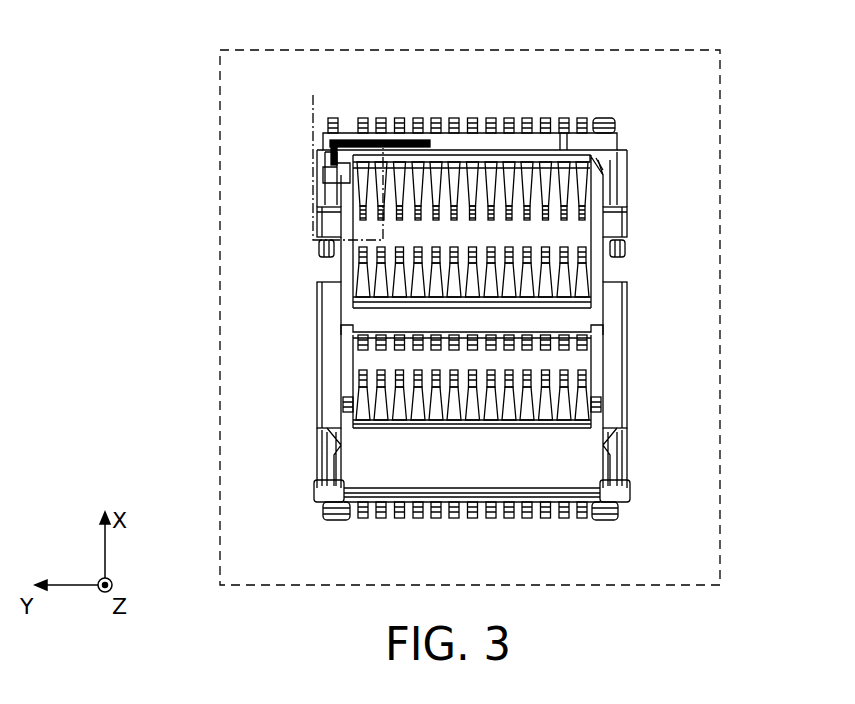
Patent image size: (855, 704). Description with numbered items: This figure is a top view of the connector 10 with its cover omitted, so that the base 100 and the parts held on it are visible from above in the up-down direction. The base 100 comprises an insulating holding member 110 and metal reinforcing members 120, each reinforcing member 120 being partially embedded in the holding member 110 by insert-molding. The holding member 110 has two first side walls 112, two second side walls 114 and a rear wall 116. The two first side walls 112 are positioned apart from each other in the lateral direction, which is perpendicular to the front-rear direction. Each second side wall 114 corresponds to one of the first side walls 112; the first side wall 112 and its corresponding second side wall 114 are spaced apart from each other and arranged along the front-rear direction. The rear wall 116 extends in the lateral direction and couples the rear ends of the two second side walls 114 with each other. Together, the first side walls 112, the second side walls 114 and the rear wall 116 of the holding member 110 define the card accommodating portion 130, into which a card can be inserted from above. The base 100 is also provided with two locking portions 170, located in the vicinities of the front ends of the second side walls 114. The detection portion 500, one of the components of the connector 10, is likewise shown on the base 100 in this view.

The connector 10 is at (252, 30).
The base 100 is at (617, 135).
The holding member 110 is at (476, 291).
The first side wall 112 is at (327, 405).
The second side wall 114 is at (328, 182).
The rear wall 116 is at (483, 140).
The reinforcing member 120 is at (318, 255).
The card accommodating portion 130 is at (566, 357).
The locking portion 170 is at (326, 226).
The detection portion 500 is at (340, 128).